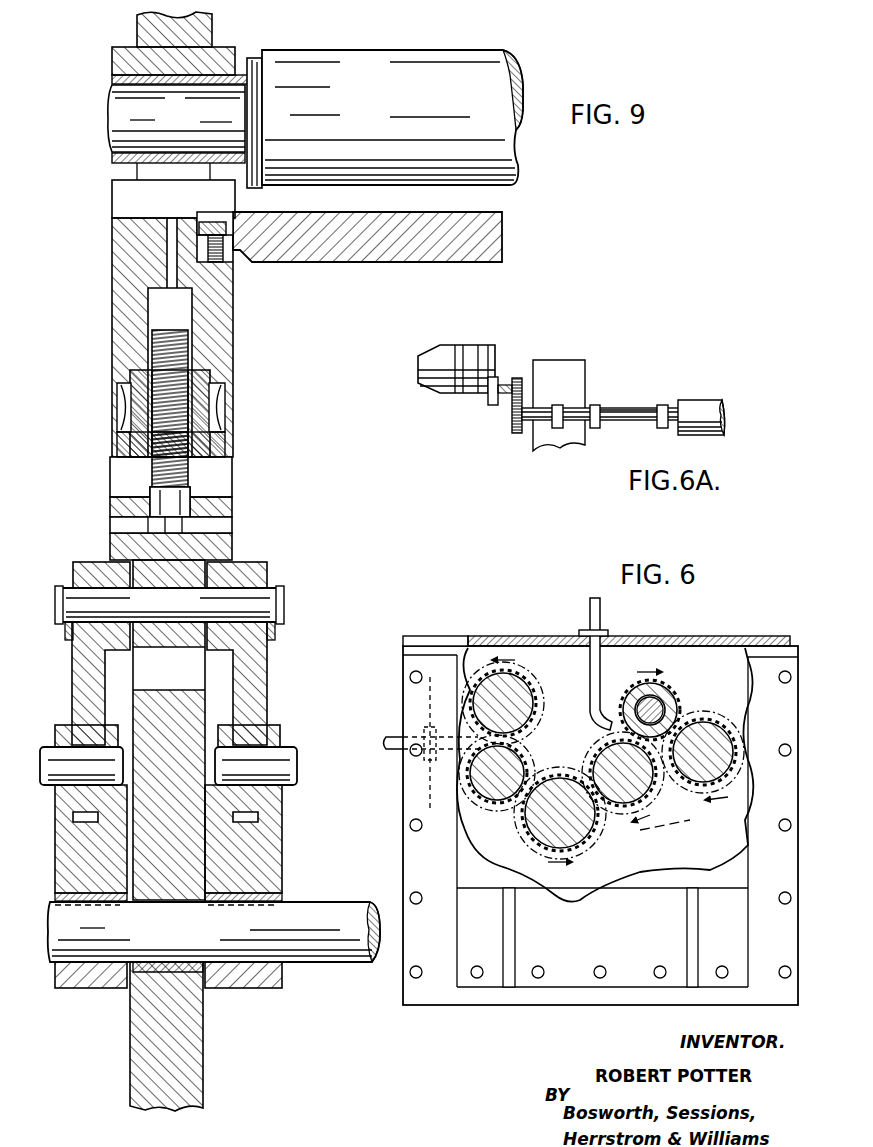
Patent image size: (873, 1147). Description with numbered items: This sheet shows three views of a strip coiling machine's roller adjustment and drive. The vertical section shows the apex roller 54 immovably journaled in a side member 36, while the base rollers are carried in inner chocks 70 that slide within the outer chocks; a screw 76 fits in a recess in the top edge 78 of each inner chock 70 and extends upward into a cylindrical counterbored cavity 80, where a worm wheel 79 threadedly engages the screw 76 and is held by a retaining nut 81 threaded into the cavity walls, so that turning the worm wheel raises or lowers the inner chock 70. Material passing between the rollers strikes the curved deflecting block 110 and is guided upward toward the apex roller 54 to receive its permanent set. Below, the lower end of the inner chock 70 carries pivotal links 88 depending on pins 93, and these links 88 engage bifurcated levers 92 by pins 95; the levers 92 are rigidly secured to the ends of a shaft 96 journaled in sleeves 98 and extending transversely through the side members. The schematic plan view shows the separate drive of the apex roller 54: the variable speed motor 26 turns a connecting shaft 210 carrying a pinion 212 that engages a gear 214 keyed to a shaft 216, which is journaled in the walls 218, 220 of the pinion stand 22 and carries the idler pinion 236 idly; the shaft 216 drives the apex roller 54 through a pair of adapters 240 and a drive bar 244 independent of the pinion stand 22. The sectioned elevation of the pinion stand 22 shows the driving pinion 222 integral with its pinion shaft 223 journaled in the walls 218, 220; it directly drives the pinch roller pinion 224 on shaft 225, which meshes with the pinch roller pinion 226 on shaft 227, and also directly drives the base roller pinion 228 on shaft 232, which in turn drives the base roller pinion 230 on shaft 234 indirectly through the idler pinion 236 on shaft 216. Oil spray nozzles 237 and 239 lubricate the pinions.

In FIG. 9, the side member 36 is at (194, 999).
In FIG. 9, the apex roller 54 is at (510, 148).
In FIG. 6A, the apex roller 54 is at (690, 403).
In FIG. 9, the curved deflecting block 110 is at (390, 256).
In FIG. 9, the cylindrical counterbored cavity 80 is at (190, 300).
In FIG. 9, the screw 76 is at (190, 346).
In FIG. 9, the worm wheel 79 is at (215, 392).
In FIG. 9, the retaining nut 81 is at (222, 443).
In FIG. 9, the top edge 78 is at (215, 508).
In FIG. 9, the inner chock 70 is at (197, 552).
In FIG. 9, the pin 93 is at (66, 590).
In FIG. 9, the pivotal link 88 is at (75, 656).
In FIG. 9, the pin 95 is at (48, 752).
In FIG. 9, the bifurcated lever 92 is at (62, 840).
In FIG. 9, the shaft 96 is at (352, 915).
In FIG. 9, the sleeve 98 is at (150, 975).
In FIG. 6A, the variable speed motor 26 is at (452, 352).
In FIG. 6A, the connecting shaft 210 is at (507, 383).
In FIG. 6A, the pinion 212 is at (519, 378).
In FIG. 6A, the gear 214 is at (516, 432).
In FIG. 6A, the shaft 216 is at (535, 437).
In FIG. 6, the shaft 216 is at (656, 706).
In FIG. 6A, the idler pinion 236 is at (560, 405).
In FIG. 6, the idler pinion 236 is at (664, 697).
In FIG. 6A, the adapter 240 is at (660, 405).
In FIG. 6A, the drive bar 244 is at (643, 424).
In FIG. 6, the pinion stand 22 is at (480, 986).
In FIG. 6, the wall 218 is at (557, 655).
In FIG. 6, the wall 220 is at (464, 846).
In FIG. 6, the oil spray nozzle 237 is at (457, 758).
In FIG. 6, the oil spray nozzle 239 is at (612, 660).
In FIG. 6, the pinch roller pinion 226 is at (505, 690).
In FIG. 6, the pinion shaft 227 is at (518, 692).
In FIG. 6, the pinch roller pinion 224 is at (520, 758).
In FIG. 6, the pinion shaft 225 is at (526, 780).
In FIG. 6, the driving pinion 222 is at (596, 826).
In FIG. 6, the pinion shaft 223 is at (520, 822).
In FIG. 6, the base roller pinion 228 is at (640, 796).
In FIG. 6, the shaft 232 is at (690, 838).
In FIG. 6, the base roller pinion 230 is at (718, 748).
In FIG. 6, the shaft 234 is at (718, 765).